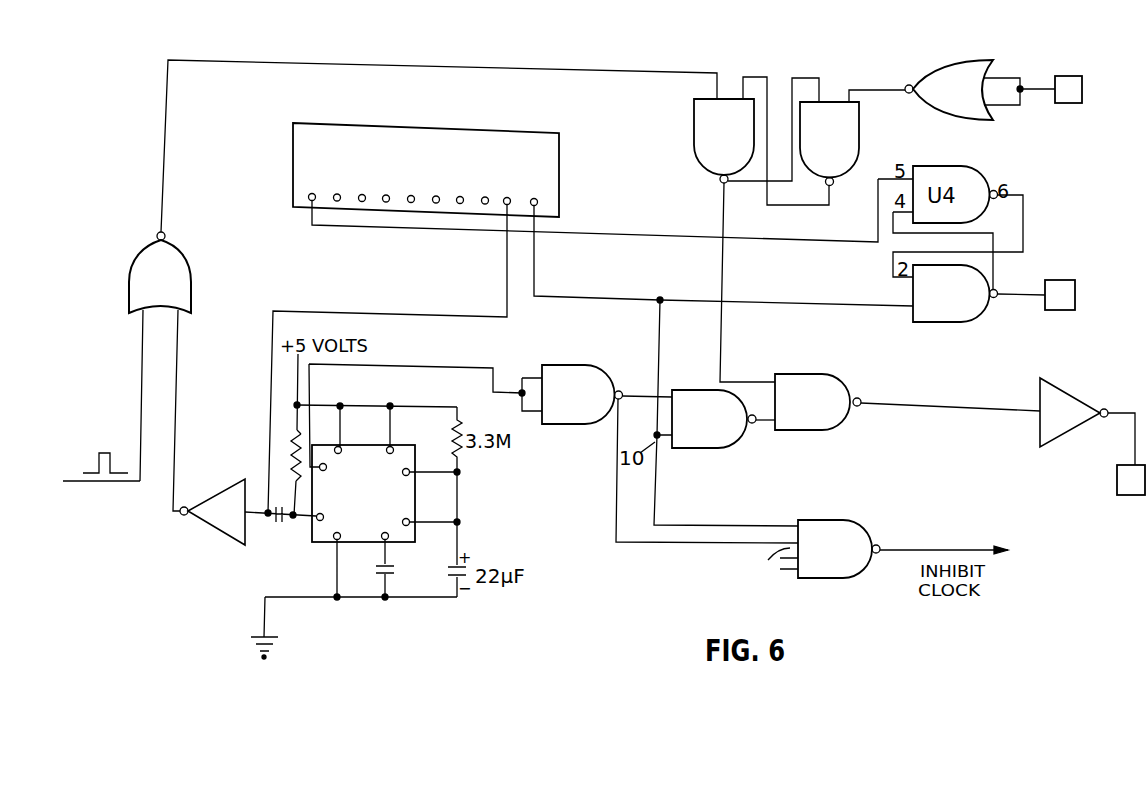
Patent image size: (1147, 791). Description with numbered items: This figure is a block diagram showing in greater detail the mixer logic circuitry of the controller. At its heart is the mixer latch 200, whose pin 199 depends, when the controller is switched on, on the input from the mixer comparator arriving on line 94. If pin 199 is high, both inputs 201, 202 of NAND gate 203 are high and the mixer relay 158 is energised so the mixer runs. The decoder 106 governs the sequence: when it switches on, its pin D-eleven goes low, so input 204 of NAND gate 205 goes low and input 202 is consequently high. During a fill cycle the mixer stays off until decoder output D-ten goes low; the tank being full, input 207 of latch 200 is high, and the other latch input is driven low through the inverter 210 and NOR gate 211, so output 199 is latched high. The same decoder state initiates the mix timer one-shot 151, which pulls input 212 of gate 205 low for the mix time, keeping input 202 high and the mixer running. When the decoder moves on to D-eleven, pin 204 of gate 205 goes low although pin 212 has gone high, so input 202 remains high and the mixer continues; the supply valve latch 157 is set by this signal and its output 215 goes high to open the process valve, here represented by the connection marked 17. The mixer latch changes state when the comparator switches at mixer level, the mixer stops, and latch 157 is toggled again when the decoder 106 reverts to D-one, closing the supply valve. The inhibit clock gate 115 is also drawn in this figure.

The line 94 is at (1040, 85).
The decoder 106 is at (536, 143).
The NAND gate U12 inhibit clock 115 is at (838, 527).
The mix timer one-shot 151 is at (411, 492).
The supply valve latch 157 is at (935, 323).
The mixer relay 158 is at (1120, 495).
The pin 199 is at (712, 178).
The mixer latch 200 is at (690, 138).
The input 201 is at (775, 390).
The input 202 is at (776, 428).
The NAND gate 203 is at (826, 383).
The input 204 is at (663, 438).
The NAND gate 205 is at (712, 448).
The input 207 is at (866, 105).
The inverter 210 is at (232, 540).
The NOR gate 211 is at (205, 273).
The input 212 is at (664, 397).
The output 215 is at (996, 304).
The line 17 is at (1060, 295).